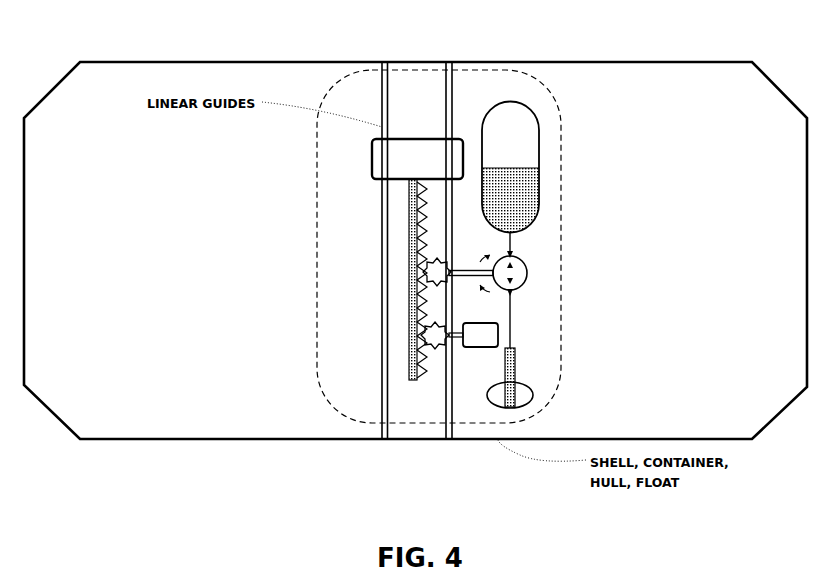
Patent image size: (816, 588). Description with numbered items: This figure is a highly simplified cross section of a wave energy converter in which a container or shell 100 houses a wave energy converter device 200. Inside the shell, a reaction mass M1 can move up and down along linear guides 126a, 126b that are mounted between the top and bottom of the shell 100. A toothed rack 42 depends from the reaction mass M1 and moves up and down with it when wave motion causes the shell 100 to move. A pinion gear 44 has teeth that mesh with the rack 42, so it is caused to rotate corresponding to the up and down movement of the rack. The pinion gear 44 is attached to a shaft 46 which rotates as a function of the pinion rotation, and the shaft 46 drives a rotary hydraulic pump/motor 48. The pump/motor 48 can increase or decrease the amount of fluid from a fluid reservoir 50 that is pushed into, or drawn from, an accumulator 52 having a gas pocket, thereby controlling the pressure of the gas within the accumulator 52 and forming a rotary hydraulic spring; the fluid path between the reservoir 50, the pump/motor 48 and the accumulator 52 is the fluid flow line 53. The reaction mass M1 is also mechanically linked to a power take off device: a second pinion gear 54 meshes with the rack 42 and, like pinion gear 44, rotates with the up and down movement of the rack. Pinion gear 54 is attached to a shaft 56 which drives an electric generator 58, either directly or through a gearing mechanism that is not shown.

The container or shell 100 is at (566, 62).
The wave energy converter (WEC) device 200 is at (317, 163).
The linear guide 126a is at (381, 100).
The linear guide 126b is at (454, 96).
The reaction mass M1 is at (372, 156).
The toothed rack 42 is at (410, 214).
The pinion gear 44 is at (423, 272).
The pinion gear 54 is at (421, 337).
The shaft 46 is at (478, 282).
The rotary hydraulic pump/motor 48 is at (527, 273).
The fluid flow line 53 is at (513, 246).
The accumulator 52 is at (538, 122).
The fluid reservoir 50 is at (534, 400).
The shaft 56 is at (459, 345).
The electric generator 58 is at (481, 348).